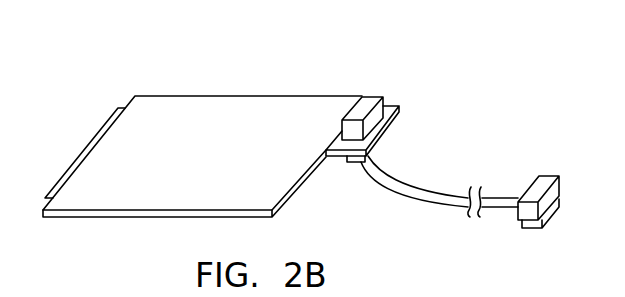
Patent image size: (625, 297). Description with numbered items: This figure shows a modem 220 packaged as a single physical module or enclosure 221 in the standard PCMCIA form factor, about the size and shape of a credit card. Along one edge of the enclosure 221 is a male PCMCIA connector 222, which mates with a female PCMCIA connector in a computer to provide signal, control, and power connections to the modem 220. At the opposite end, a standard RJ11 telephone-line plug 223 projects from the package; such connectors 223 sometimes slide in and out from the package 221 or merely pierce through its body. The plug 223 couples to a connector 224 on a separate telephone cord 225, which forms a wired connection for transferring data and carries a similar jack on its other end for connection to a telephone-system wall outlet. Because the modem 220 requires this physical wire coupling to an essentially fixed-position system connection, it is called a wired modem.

The modem 220 is at (310, 135).
The enclosure 221 is at (277, 103).
The male PCMCIA connector 222 is at (83, 150).
The RJ11 telephone-line plug 223 is at (390, 118).
The connector 224 is at (371, 99).
The telephone cord 225 is at (422, 208).